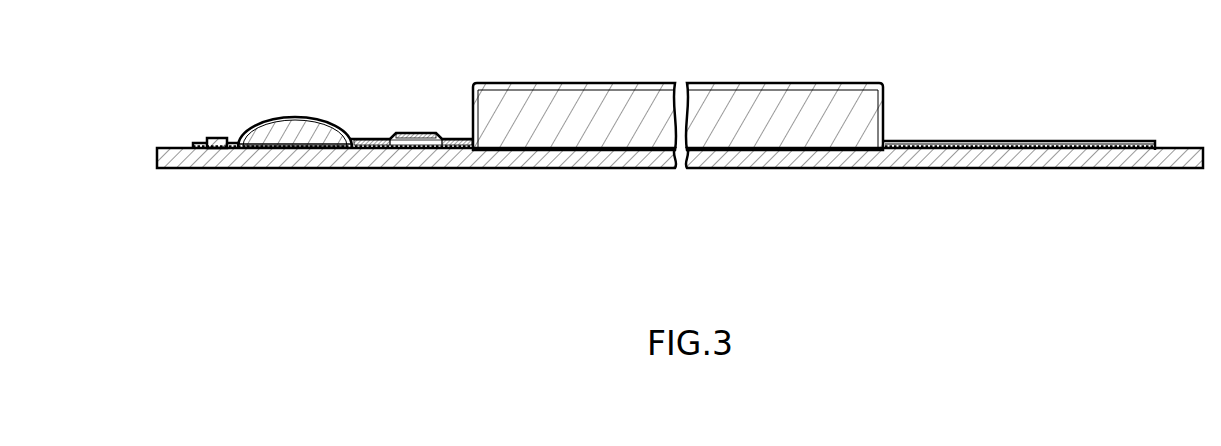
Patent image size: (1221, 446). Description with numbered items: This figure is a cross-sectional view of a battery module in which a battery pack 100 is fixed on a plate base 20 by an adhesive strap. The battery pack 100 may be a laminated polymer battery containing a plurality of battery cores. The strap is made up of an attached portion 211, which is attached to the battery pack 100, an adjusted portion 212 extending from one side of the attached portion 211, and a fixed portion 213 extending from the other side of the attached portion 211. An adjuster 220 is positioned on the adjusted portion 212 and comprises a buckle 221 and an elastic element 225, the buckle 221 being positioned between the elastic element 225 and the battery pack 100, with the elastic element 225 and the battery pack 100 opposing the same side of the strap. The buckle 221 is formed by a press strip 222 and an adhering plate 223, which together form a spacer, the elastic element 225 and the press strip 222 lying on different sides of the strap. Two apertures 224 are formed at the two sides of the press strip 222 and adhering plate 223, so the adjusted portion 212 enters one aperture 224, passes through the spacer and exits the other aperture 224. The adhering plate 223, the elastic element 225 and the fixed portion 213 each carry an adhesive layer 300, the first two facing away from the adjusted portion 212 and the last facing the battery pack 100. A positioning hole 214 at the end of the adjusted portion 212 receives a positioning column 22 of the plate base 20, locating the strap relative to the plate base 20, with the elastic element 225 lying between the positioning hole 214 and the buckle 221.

The plate base 20 is at (200, 167).
The positioning column 22 is at (218, 138).
The battery pack 100 is at (560, 161).
The attached portion 211 is at (546, 90).
The adjusted portion 212 is at (310, 133).
The fixed portion 213 is at (1018, 140).
The positioning hole 214 is at (198, 139).
The adjuster 220 is at (355, 170).
The buckle 221 is at (406, 187).
The press strip 222 is at (416, 170).
The adhering plate 223 is at (372, 149).
The aperture 224 is at (389, 128).
The elastic element 225 is at (309, 149).
The adhesive layer 300 is at (268, 149).